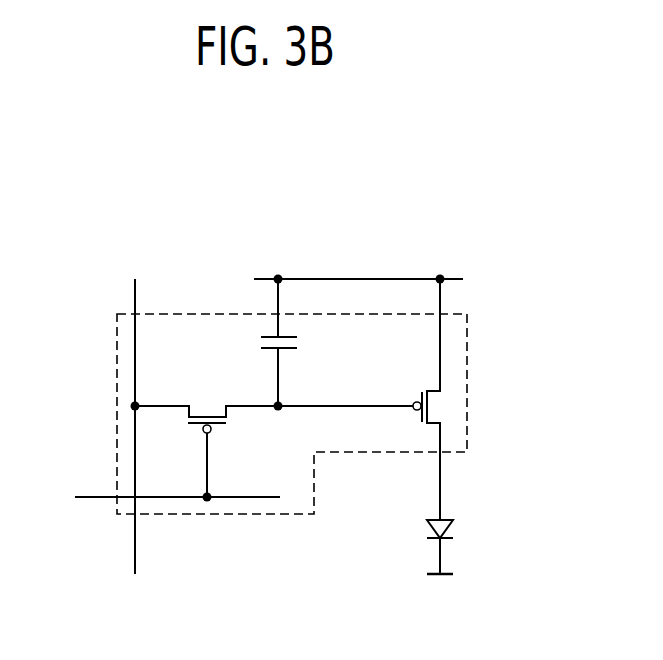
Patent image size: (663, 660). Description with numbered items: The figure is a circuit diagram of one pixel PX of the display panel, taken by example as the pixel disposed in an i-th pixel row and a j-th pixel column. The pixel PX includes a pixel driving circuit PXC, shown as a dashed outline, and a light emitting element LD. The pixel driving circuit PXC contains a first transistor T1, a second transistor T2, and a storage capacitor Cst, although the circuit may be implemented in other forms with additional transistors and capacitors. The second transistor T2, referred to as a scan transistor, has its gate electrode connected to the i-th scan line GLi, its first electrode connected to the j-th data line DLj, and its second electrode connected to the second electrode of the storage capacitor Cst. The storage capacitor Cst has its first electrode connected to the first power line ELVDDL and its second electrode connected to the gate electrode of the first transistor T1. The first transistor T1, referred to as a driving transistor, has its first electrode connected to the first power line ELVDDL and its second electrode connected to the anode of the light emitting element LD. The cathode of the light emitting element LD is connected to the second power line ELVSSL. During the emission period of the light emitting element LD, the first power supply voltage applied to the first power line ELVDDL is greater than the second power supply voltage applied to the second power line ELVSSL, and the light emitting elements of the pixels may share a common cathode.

The pixel PX is at (440, 194).
The pixel driving circuit PXC is at (468, 352).
The j-th data line DLj is at (135, 409).
The i-th scan line GLi is at (159, 496).
The first power line ELVDDL is at (358, 266).
The second power line ELVSSL is at (439, 591).
The storage capacitor Cst is at (295, 342).
The first transistor T1 is at (368, 399).
The second transistor T2 is at (207, 440).
The light emitting element LD is at (454, 545).